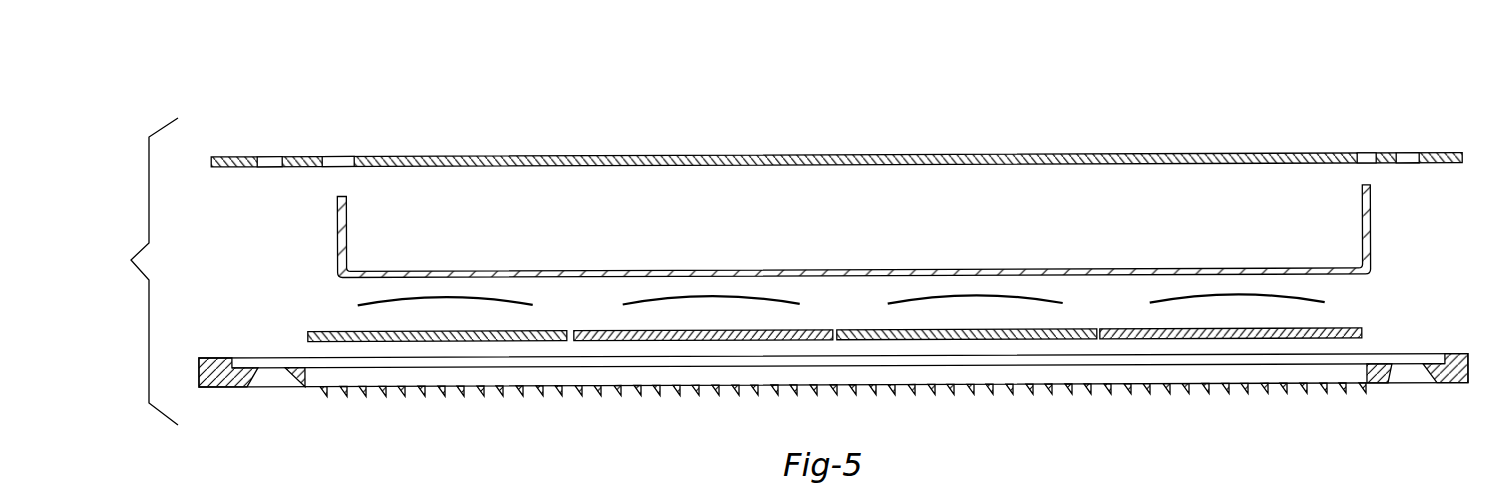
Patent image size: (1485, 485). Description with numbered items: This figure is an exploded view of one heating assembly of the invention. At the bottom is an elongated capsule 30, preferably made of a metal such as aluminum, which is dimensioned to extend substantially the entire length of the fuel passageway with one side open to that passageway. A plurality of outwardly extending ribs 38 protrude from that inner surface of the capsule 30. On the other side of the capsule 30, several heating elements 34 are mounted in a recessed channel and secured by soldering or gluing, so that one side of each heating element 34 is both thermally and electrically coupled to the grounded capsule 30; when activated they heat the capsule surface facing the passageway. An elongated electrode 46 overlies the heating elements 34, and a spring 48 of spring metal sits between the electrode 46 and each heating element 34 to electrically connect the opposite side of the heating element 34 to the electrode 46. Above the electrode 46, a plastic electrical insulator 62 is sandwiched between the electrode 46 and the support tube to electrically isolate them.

The capsule 30 is at (300, 388).
The heating elements 34 is at (600, 343).
The ribs 38 is at (1125, 398).
The electrode 46 is at (760, 272).
The spring 48 is at (368, 304).
The electrical insulator 62 is at (722, 157).